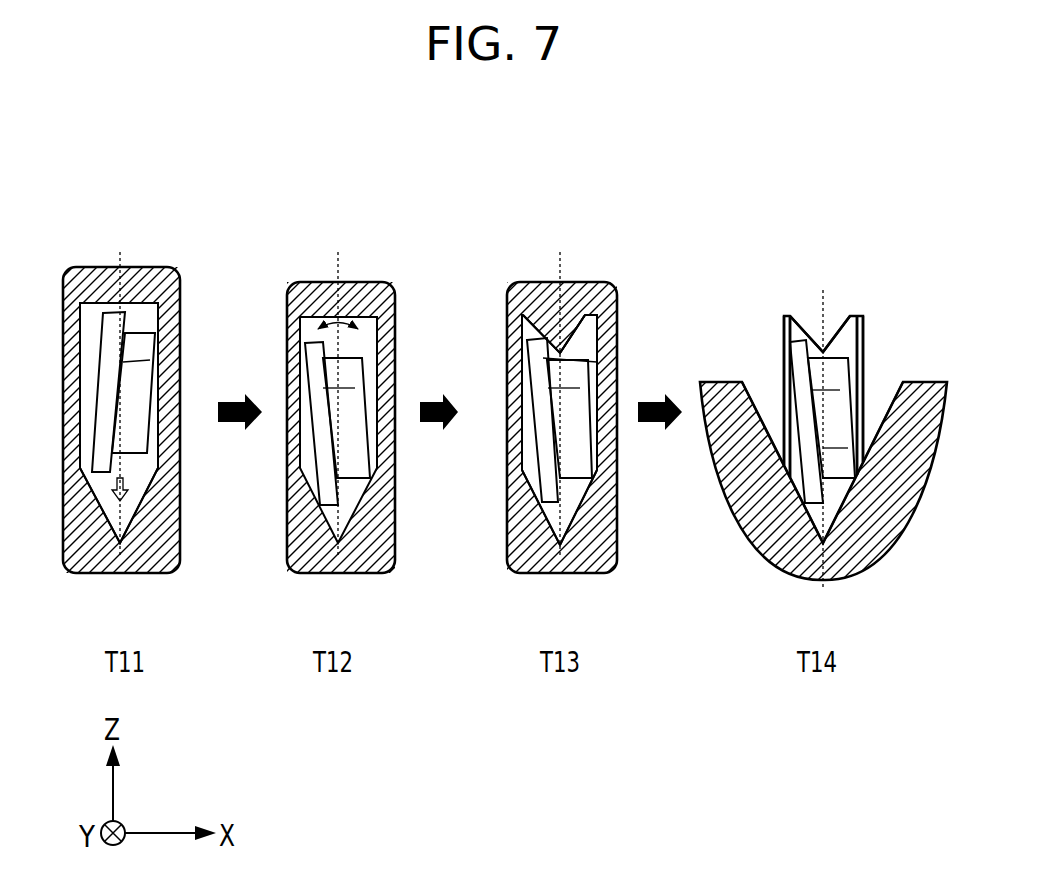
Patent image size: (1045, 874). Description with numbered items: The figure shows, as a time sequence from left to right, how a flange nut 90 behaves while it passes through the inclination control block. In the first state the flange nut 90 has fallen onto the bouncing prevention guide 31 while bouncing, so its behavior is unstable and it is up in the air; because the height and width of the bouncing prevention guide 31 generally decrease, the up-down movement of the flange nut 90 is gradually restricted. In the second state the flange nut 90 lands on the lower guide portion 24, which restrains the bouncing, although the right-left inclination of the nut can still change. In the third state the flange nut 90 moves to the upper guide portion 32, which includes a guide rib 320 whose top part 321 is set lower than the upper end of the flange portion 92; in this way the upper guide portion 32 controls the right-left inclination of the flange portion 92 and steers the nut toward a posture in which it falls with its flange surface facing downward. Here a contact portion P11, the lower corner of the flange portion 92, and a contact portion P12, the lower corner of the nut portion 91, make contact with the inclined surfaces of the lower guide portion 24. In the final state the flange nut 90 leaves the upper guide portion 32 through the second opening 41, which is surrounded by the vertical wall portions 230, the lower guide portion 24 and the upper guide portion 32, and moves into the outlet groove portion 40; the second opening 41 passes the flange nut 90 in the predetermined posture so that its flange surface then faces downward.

The bouncing prevention guide 31 is at (142, 254).
The upper guide portion 32 is at (575, 267).
The lower guide portion 24 is at (133, 525).
The flange nut 90 is at (126, 341).
The nut portion 91 is at (142, 405).
The flange portion 92 is at (100, 392).
The guide rib 320 is at (508, 343).
The top part 321 is at (600, 355).
The contact portion P11 is at (528, 515).
The contact portion P12 is at (608, 484).
The outlet groove portion 40 is at (893, 405).
The second opening 41 is at (795, 309).
The vertical wall portions 230 is at (784, 362).